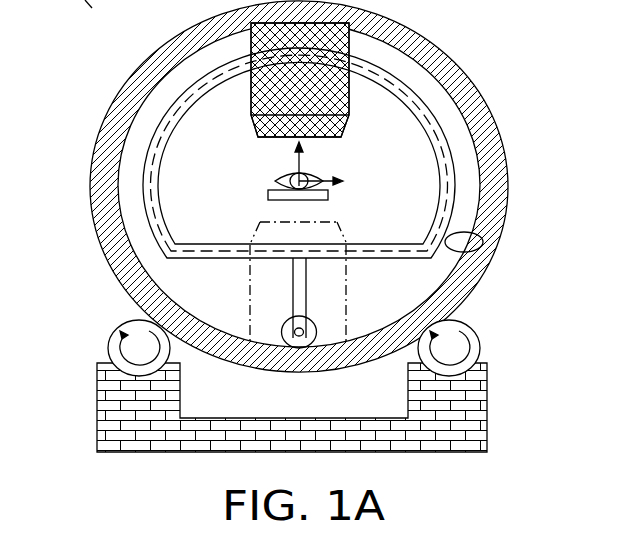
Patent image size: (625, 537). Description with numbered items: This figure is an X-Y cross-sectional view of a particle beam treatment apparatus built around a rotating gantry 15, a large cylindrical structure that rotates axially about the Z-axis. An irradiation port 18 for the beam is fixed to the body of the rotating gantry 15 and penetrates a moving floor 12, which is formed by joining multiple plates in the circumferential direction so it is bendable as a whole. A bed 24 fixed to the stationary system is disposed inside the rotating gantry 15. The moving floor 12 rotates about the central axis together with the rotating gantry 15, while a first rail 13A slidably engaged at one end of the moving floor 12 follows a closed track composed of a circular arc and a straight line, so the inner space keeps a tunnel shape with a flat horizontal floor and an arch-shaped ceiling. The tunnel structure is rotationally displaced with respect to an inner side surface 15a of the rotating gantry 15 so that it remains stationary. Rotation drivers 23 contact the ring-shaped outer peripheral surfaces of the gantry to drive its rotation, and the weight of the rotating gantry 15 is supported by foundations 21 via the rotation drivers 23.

The moving floor 12 is at (150, 178).
The first rail 13A is at (162, 215).
The rotating gantry 15 is at (470, 284).
The inner side surface 15a is at (480, 250).
The irradiation port 18 is at (349, 127).
The foundation 21 is at (97, 420).
The rotation driver 23 is at (118, 322).
The bed 24 is at (328, 195).